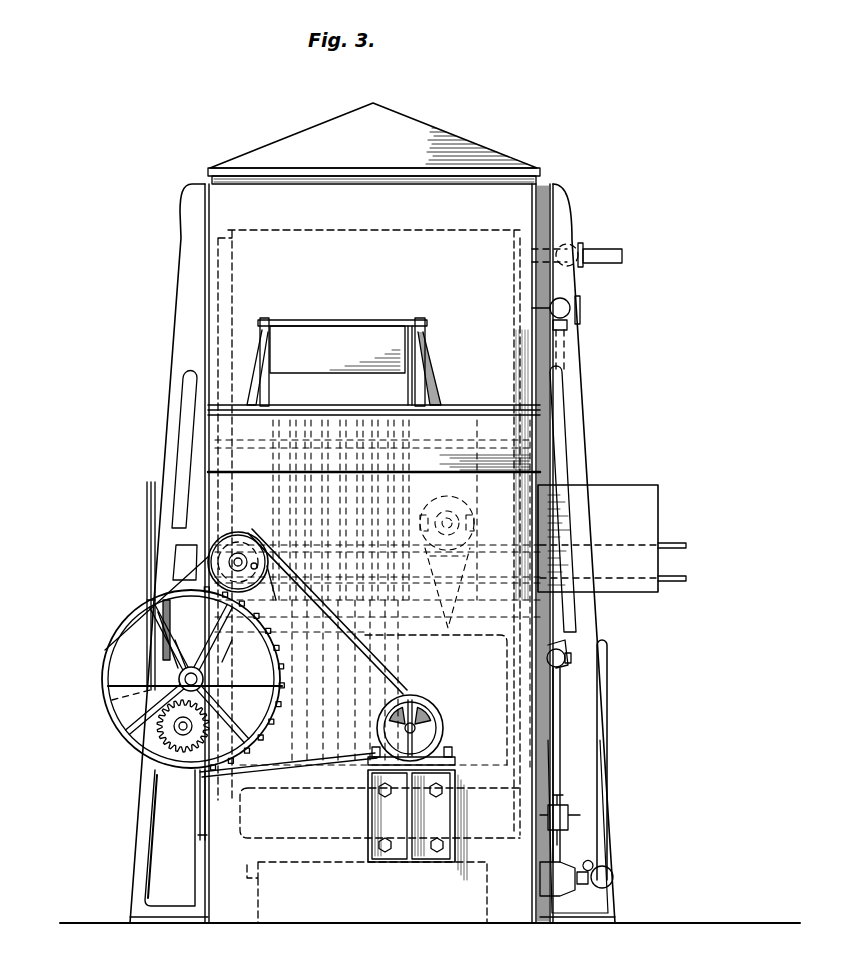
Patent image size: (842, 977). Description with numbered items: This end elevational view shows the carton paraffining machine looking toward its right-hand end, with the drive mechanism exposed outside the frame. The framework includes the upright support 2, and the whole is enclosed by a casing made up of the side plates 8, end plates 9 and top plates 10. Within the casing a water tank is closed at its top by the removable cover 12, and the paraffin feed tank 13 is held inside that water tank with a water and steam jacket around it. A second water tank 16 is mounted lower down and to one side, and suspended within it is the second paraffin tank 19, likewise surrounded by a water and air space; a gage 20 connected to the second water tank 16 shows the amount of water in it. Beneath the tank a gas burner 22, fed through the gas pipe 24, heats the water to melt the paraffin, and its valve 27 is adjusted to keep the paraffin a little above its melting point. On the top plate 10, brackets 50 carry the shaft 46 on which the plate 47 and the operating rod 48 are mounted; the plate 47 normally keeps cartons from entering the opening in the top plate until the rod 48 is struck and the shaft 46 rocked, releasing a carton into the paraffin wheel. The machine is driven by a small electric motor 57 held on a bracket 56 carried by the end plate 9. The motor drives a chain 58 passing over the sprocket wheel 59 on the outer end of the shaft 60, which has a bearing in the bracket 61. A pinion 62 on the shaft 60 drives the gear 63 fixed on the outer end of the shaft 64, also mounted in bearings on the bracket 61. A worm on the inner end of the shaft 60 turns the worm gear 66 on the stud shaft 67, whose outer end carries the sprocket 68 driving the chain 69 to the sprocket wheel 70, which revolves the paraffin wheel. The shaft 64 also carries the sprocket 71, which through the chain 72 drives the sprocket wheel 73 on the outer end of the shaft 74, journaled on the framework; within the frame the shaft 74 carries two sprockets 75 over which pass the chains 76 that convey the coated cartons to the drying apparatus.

The upright support 2 is at (181, 243).
The side plates 8 is at (203, 812).
The end plates 9 is at (302, 780).
The top plates 10 is at (374, 438).
The removable cover 12 is at (432, 146).
The paraffin feed tank 13 is at (375, 240).
The second water tank 16 is at (598, 722).
The second paraffin tank 19 is at (495, 755).
The gage 20 is at (566, 754).
The gas burner 22 is at (355, 878).
The gas pipe 24 is at (613, 877).
The valves 27 is at (582, 882).
The shaft 46 is at (327, 321).
The plate 47 is at (337, 349).
The operating rod 48 is at (407, 385).
The brackets 50 is at (262, 345).
The bracket 56 is at (385, 812).
The electric motor 57 is at (432, 716).
The chain 58 is at (383, 681).
The sprocket wheel 59 is at (115, 720).
The shaft 60 is at (206, 688).
The bracket 61 is at (168, 660).
The pinion 62 is at (110, 702).
The gear 63 is at (165, 732).
The shaft 64 is at (178, 738).
The worm gear 66 is at (158, 612).
The stud shaft 67 is at (175, 643).
The sprocket 68 is at (160, 633).
The chain 69 is at (148, 492).
The sprocket wheel 70 is at (148, 532).
The sprocket 71 is at (188, 805).
The chain 72 is at (243, 655).
The sprocket wheel 73 is at (247, 548).
The shaft 74 is at (226, 556).
The sprockets 75 is at (240, 556).
The chains 76 is at (684, 546).